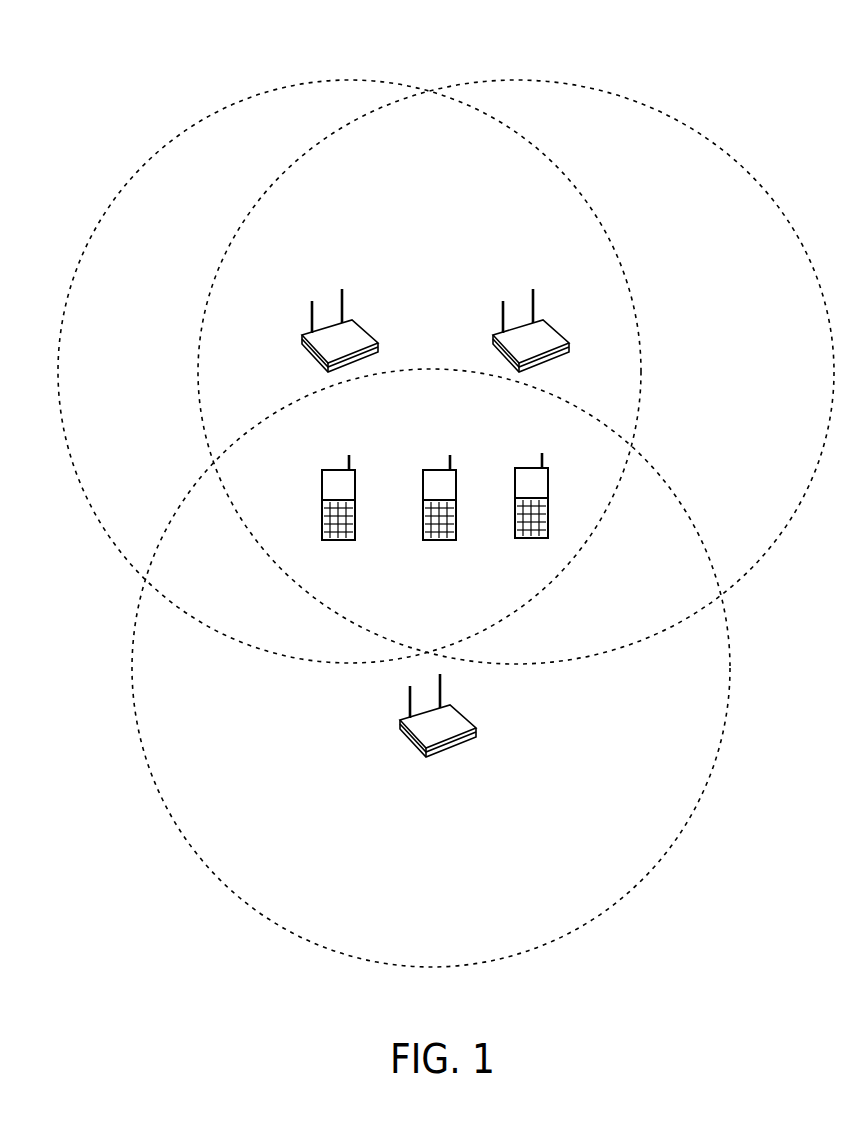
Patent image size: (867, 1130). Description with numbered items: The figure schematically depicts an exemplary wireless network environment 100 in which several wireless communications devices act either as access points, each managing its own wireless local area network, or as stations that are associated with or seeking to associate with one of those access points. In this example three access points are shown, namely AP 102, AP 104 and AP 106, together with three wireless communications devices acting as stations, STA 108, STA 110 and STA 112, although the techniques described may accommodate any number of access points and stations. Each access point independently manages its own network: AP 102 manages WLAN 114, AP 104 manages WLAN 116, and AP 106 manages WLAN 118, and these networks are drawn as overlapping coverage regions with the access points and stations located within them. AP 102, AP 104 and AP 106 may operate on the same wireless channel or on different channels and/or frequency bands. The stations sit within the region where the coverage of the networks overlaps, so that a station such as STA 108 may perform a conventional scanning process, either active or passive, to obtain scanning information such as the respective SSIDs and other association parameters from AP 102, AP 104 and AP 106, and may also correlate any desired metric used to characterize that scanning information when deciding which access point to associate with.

The wireless network environment 100 is at (207, 63).
The AP 102 is at (361, 324).
The AP 104 is at (552, 324).
The AP 106 is at (459, 709).
The STA 108 is at (355, 524).
The STA 110 is at (456, 524).
The STA 112 is at (548, 522).
The WLAN 114 is at (345, 82).
The WLAN 116 is at (533, 80).
The WLAN 118 is at (573, 932).